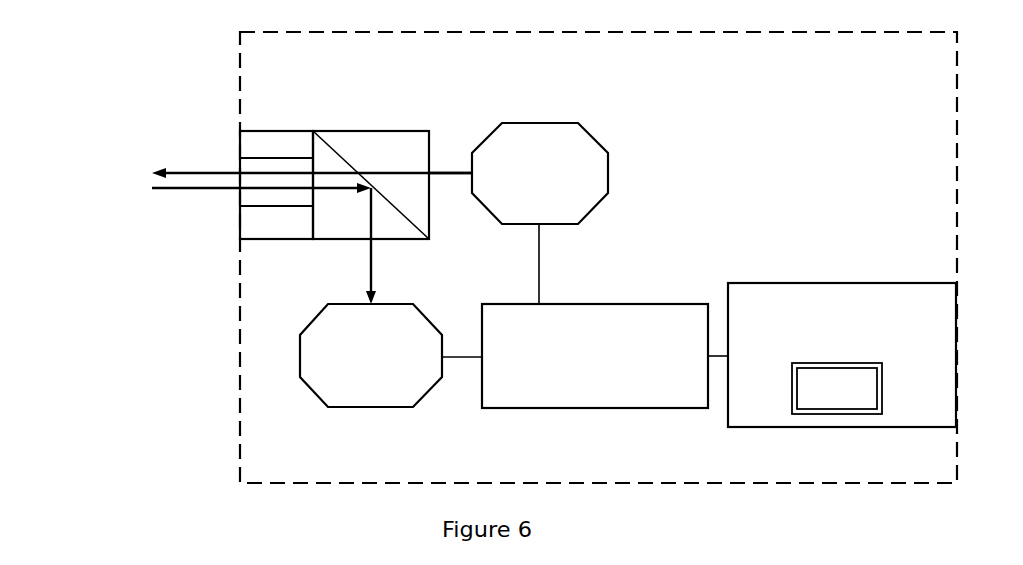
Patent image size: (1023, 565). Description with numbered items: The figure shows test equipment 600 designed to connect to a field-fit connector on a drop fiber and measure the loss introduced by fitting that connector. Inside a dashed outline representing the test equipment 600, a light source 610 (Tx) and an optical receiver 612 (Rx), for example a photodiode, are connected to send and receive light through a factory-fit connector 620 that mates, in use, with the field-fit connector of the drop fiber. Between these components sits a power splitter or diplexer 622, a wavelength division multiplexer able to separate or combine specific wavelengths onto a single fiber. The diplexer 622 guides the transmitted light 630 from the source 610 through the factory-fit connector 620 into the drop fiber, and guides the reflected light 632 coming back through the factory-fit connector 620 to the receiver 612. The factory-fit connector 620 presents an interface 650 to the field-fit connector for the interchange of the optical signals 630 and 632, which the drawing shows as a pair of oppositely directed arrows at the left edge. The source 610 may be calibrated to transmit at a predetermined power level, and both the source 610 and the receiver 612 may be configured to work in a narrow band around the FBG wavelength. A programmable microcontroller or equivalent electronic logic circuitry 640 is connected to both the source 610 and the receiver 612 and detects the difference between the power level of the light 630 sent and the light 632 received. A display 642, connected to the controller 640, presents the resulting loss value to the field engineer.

The test equipment 600 is at (813, 141).
The light source 610 is at (578, 187).
The optical receiver 612 is at (392, 386).
The factory-fit connector 620 is at (276, 171).
The diplexer 622 is at (371, 171).
The transmitted light 630 is at (447, 173).
The reflected light 632 is at (370, 252).
The programmable microcontroller 640 is at (660, 369).
The display 642 is at (865, 351).
The interface 650 is at (212, 139).